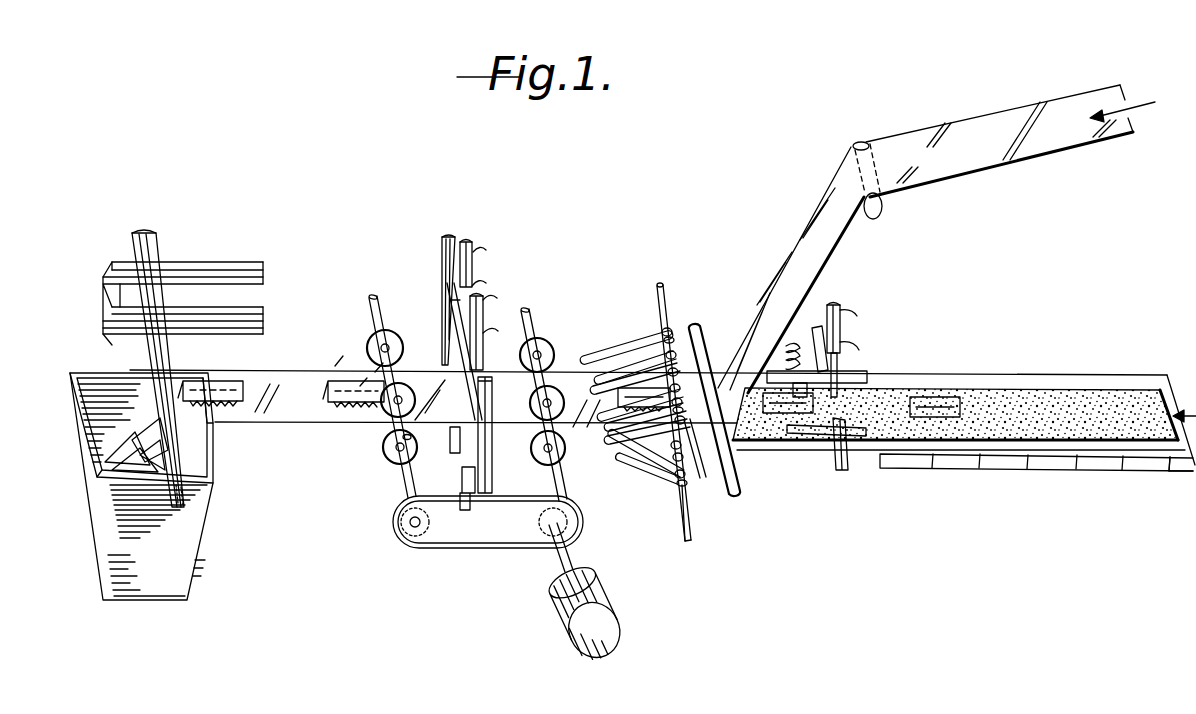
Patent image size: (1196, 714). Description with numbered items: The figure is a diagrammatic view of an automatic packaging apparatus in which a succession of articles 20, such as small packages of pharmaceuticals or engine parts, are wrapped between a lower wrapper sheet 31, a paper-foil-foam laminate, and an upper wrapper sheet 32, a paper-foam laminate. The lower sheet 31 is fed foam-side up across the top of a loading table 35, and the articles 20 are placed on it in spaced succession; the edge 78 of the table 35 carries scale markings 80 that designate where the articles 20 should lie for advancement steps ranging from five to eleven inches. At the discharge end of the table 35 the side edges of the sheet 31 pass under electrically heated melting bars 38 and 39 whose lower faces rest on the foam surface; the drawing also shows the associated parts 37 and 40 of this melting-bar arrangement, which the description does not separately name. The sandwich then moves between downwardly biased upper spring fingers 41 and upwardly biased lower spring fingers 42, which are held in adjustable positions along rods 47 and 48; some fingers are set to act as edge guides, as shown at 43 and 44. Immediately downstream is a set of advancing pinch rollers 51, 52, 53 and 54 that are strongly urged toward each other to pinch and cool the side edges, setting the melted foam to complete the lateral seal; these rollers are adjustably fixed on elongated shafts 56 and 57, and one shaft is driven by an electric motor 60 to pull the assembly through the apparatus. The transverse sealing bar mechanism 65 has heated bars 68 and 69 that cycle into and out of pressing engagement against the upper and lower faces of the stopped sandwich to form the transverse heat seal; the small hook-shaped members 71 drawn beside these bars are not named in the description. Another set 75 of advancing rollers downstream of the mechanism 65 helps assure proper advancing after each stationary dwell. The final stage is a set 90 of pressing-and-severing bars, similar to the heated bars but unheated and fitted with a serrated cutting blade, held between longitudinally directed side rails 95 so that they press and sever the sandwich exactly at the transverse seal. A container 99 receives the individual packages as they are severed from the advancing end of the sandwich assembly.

The articles 20 is at (212, 385).
The lower wrapper sheet 31 is at (998, 387).
The upper wrapper sheet 32 is at (937, 168).
The loading table 35 is at (1132, 380).
The rod 37 is at (840, 470).
The melting bar 38 is at (858, 440).
The melting bar 39 is at (857, 383).
The lever 40 is at (845, 322).
The upper spring fingers 41 is at (625, 363).
The lower spring fingers 42 is at (641, 462).
The edge guide finger 43 is at (597, 380).
The edge guide finger 44 is at (608, 441).
The rod 47 is at (670, 303).
The rod 48 is at (693, 538).
The pinch roller 51 is at (577, 308).
The pinch roller 52 is at (500, 375).
The pinch roller 53 is at (567, 397).
The pinch roller 54 is at (550, 460).
The elongated shaft 56 is at (545, 296).
The elongated shaft 57 is at (562, 488).
The electric motor 60 is at (610, 612).
The transverse sealing bar mechanism 65 is at (444, 300).
The heated bar 68 is at (462, 300).
The heated bar 69 is at (462, 342).
The hooks 71 is at (485, 300).
The set of advancing rollers 75 is at (368, 460).
The edge of table 78 is at (1158, 465).
The scale markings 80 is at (1025, 462).
The set of pressing-and-severing bars 90 is at (134, 236).
The side rails 95 is at (234, 268).
The container 99 is at (188, 568).